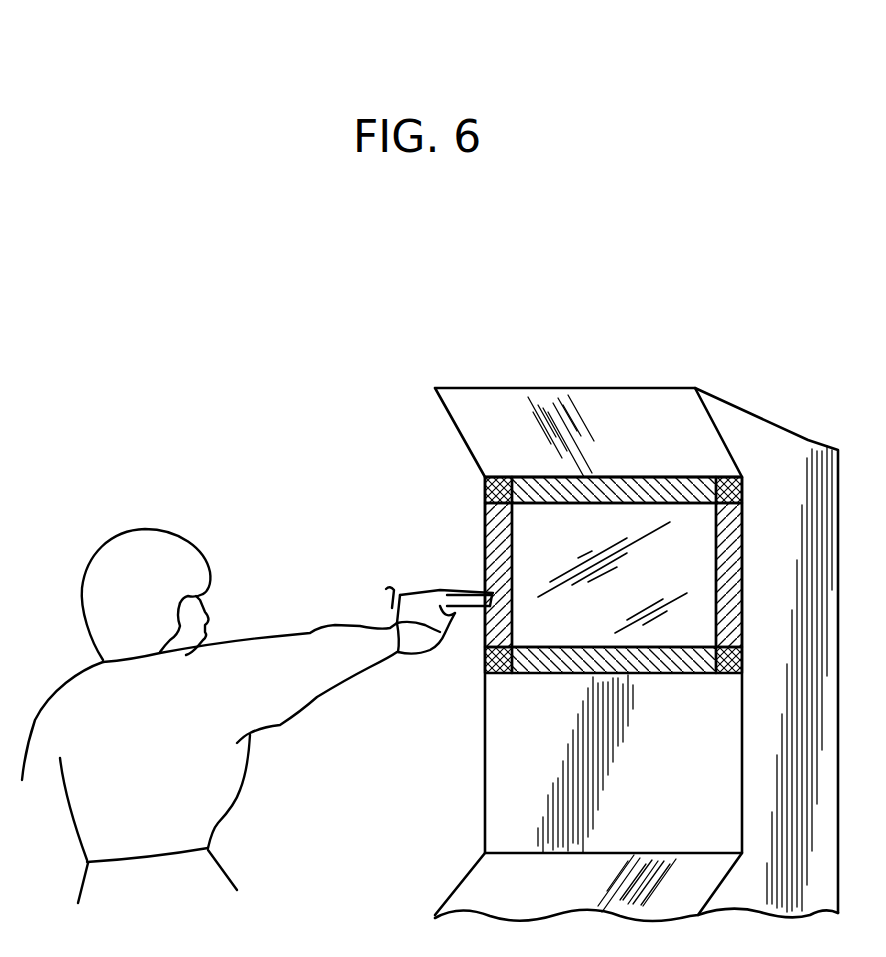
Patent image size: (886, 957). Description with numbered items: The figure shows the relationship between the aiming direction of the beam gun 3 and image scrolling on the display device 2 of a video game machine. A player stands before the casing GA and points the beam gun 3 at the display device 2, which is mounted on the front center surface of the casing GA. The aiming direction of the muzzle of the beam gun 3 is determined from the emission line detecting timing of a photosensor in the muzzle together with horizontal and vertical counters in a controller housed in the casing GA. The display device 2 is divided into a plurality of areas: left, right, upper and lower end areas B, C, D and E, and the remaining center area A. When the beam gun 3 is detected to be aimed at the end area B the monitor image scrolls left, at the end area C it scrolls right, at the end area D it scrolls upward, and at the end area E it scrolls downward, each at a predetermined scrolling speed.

The casing GA is at (628, 630).
The display device 2 is at (580, 575).
The beam gun 3 is at (433, 590).
The center area A is at (614, 575).
The left end area B is at (498, 575).
The right end area C is at (729, 575).
The upper end area D is at (614, 491).
The lower end area E is at (614, 660).